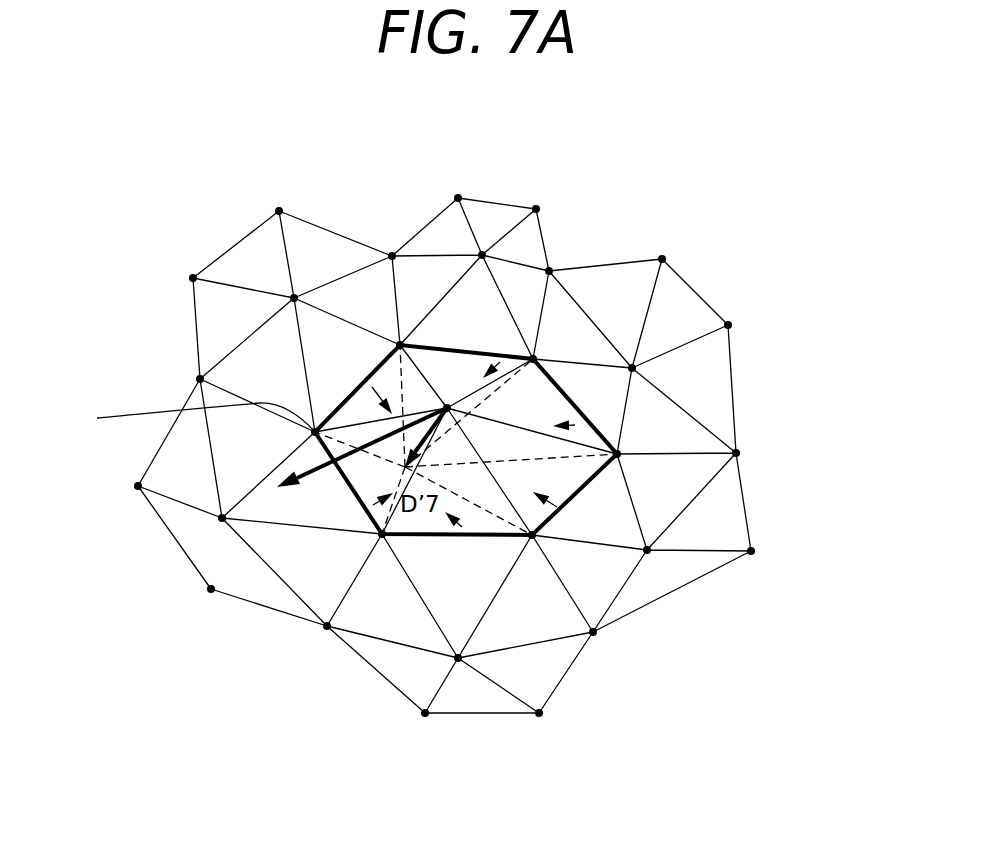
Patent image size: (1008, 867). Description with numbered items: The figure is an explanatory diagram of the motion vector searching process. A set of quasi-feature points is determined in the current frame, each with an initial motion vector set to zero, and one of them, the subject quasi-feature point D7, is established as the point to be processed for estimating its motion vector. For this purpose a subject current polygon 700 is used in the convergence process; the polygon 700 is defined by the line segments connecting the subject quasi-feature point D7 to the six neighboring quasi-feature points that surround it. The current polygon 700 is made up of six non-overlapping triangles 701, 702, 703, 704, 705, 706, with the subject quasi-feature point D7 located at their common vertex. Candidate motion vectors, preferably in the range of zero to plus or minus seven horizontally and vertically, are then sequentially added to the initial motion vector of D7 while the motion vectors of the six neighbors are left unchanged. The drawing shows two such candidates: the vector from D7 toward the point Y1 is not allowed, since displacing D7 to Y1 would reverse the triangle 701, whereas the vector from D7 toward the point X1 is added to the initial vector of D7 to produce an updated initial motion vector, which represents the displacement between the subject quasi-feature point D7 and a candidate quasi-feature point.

The subject current polygon 700 is at (580, 489).
The triangle 701 is at (373, 505).
The triangle 702 is at (372, 387).
The triangle 703 is at (500, 362).
The triangle 704 is at (575, 425).
The triangle 705 is at (557, 507).
The triangle 706 is at (462, 527).
The candidate motion vector endpoint X1 is at (186, 418).
The disallowed candidate motion vector endpoint Y1 is at (362, 455).
The subject quasi-feature point D7 is at (458, 390).